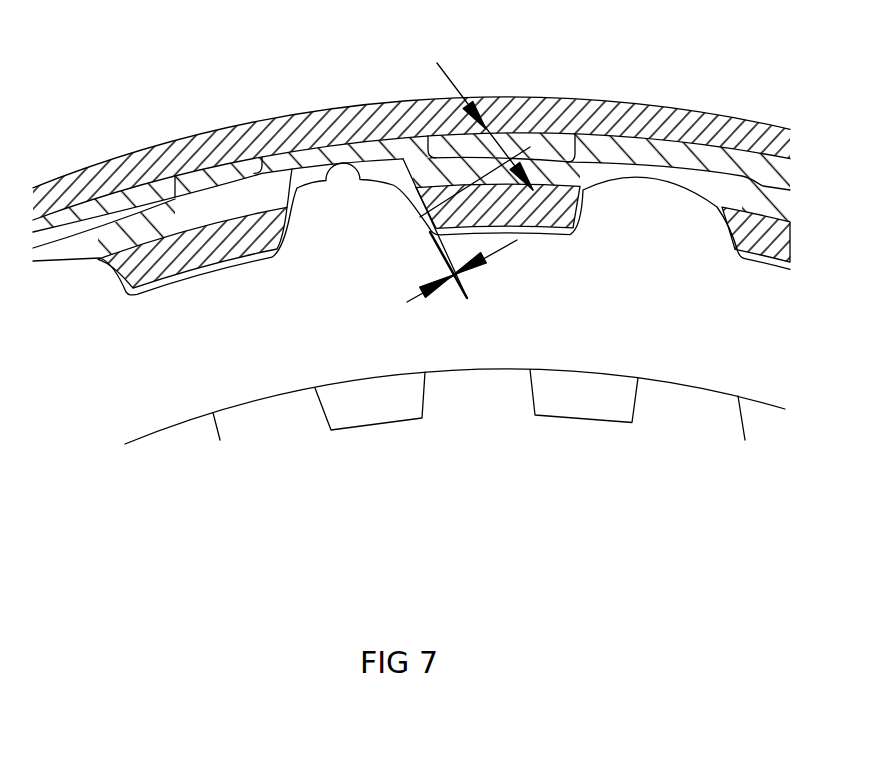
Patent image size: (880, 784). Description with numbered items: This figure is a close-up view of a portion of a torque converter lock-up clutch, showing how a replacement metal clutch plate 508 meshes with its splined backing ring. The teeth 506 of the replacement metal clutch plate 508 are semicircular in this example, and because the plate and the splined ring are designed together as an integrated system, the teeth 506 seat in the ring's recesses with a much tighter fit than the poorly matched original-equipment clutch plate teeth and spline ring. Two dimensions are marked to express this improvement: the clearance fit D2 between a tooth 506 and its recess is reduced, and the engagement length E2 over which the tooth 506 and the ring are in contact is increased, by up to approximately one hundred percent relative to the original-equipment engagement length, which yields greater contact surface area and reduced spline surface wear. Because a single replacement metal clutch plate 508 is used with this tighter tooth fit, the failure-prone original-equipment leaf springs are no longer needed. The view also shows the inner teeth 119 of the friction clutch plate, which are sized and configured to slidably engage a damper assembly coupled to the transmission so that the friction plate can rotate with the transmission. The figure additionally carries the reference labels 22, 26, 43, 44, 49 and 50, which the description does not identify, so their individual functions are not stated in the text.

The belt body 22 is at (350, 107).
The tensile cord layer 26 is at (263, 162).
The belt tooth 43 is at (210, 247).
The fabric layer 44 is at (635, 267).
The tooth facing layer 49 is at (690, 185).
The belt tooth 50 is at (583, 207).
The inner teeth 119 is at (532, 397).
The teeth 506 is at (349, 222).
The replacement metal clutch plate 508 is at (539, 319).
The engagement length E2 is at (437, 63).
The clearance fit D2 is at (407, 302).